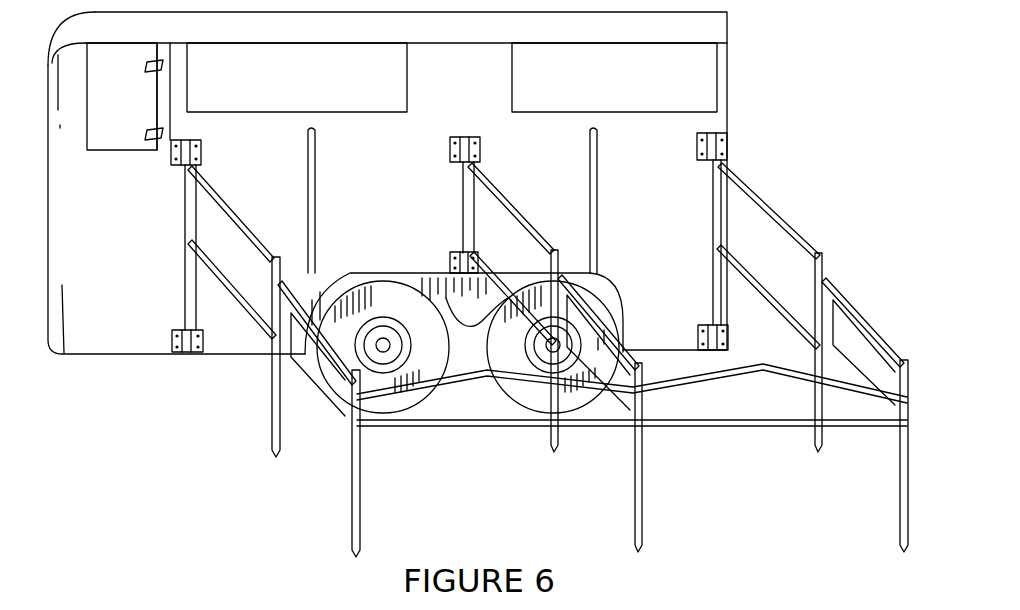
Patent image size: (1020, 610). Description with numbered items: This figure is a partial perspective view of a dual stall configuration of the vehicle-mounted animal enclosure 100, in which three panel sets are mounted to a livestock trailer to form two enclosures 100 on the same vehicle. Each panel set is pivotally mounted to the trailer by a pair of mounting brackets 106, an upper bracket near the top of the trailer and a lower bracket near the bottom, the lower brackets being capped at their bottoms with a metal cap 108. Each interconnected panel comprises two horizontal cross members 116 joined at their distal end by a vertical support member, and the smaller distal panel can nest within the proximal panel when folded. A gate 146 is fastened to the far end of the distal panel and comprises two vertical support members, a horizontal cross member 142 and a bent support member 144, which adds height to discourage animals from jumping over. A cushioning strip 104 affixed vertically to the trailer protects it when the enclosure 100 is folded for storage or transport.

The animal enclosure 100 is at (862, 280).
The cushioning strip 104 is at (315, 172).
The mounting bracket 106 is at (201, 150).
The metal cap 108 is at (191, 355).
The horizontal cross member 116 is at (776, 214).
The horizontal cross member of gate 142 is at (490, 426).
The bent support member 144 is at (466, 385).
The gate 146 is at (427, 436).